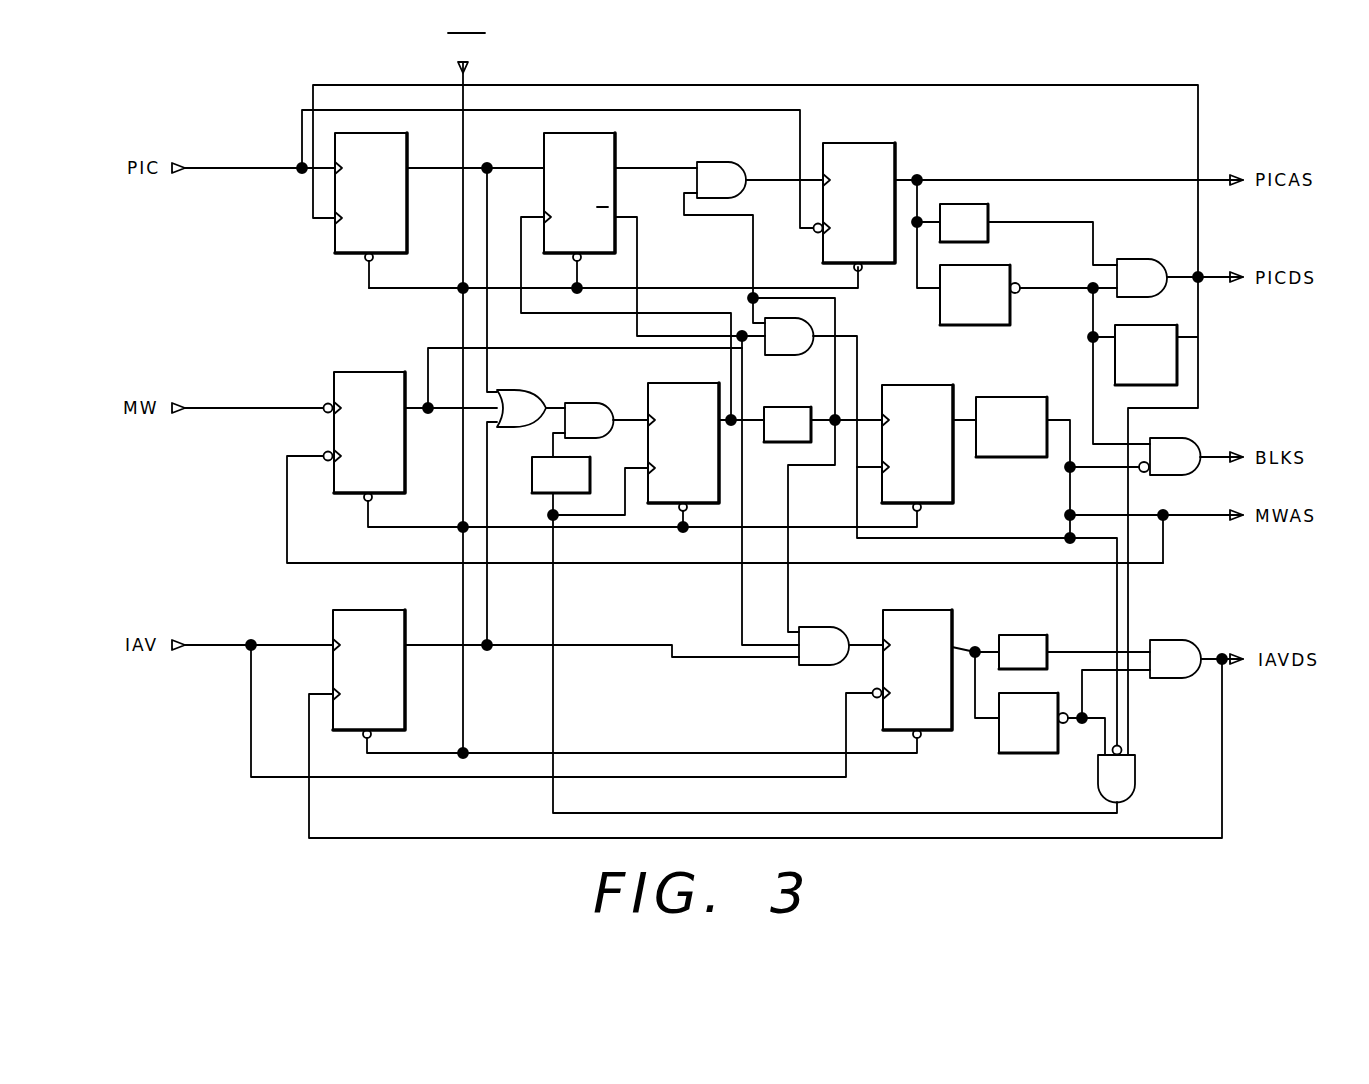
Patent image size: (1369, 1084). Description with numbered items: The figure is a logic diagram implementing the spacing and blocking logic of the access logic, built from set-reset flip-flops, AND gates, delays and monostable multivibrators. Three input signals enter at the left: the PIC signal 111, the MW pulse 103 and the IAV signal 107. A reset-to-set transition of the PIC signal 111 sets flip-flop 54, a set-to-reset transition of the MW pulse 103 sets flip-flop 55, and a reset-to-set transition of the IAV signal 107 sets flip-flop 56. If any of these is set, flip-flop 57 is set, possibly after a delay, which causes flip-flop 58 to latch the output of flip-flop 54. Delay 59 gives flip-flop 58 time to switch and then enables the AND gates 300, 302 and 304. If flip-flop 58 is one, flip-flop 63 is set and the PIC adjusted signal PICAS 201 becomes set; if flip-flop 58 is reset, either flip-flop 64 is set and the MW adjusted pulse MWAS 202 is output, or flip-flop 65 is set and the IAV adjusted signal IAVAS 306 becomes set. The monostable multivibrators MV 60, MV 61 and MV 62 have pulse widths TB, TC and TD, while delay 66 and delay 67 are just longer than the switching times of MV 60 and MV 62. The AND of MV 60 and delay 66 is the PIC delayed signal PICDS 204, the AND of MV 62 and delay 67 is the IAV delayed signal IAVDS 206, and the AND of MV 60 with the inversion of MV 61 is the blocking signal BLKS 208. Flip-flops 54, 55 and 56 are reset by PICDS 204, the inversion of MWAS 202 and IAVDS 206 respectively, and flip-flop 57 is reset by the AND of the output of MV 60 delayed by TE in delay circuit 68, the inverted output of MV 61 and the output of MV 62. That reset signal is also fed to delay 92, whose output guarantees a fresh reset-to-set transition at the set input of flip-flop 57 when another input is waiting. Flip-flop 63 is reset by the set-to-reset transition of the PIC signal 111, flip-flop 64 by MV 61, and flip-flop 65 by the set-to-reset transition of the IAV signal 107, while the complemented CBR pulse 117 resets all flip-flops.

The PIC signal 111 is at (206, 168).
The CBR pulse 117 is at (468, 70).
The flip-flop 54 is at (408, 222).
The flip-flop 58 is at (616, 157).
The AND gate 300 is at (713, 162).
The flip-flop 63 is at (868, 143).
The PIC adjusted signal (PICAS) 201 is at (1200, 180).
The delay 66 is at (990, 212).
The PIC delayed signal (PICDS) 204 is at (1210, 277).
The monostable multivibrator (MV) 60 is at (940, 311).
The delay circuit 68 is at (1165, 325).
The MW pulse 103 is at (215, 408).
The flip-flop 55 is at (406, 463).
The delay (DLY) 92 is at (534, 472).
The flip-flop 57 is at (700, 383).
The AND gate 302 is at (780, 355).
The delay (DLY) 59 is at (768, 445).
The flip-flop 64 is at (905, 385).
The monostable multivibrator (MV) 61 is at (1010, 397).
The blocking signal (BLKS) 208 is at (1205, 457).
The MW adjusted signal (MWAS) 202 is at (1185, 515).
The IAV signal 107 is at (230, 627).
The flip-flop 56 is at (406, 690).
The AND gate 304 is at (812, 627).
The flip-flop 65 is at (915, 608).
The IAV adjusted signal (IAVAS) 306 is at (996, 629).
The delay (DLY) 67 is at (1030, 635).
The IAV delayed signal (IAVDS) 206 is at (1205, 659).
The monostable multivibrator (MV) 62 is at (1015, 758).